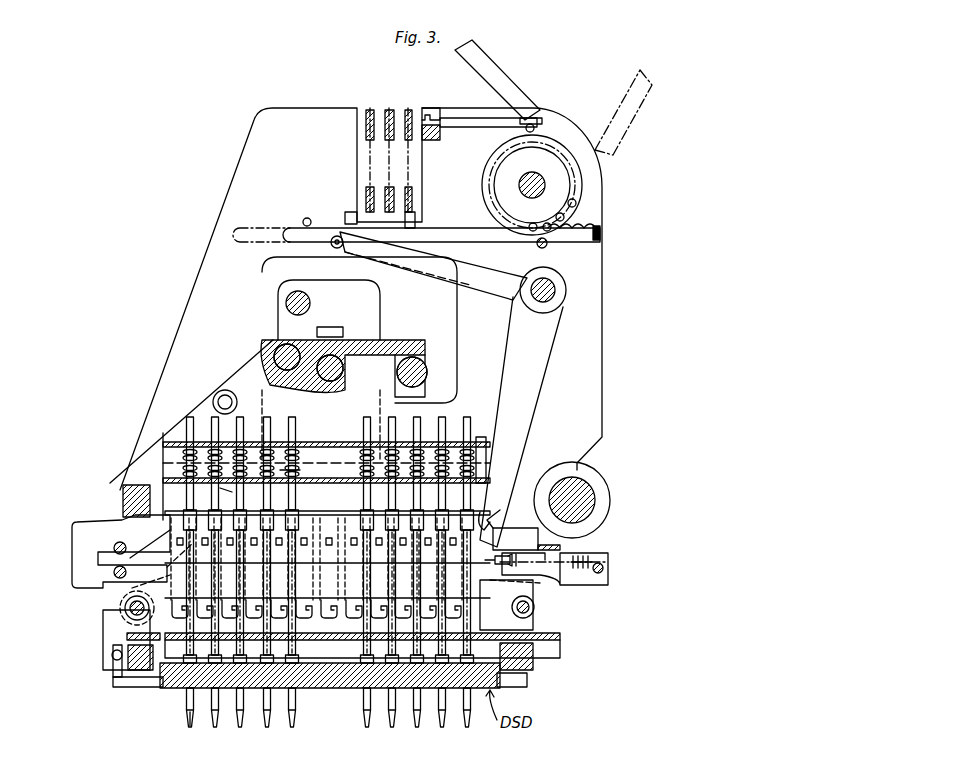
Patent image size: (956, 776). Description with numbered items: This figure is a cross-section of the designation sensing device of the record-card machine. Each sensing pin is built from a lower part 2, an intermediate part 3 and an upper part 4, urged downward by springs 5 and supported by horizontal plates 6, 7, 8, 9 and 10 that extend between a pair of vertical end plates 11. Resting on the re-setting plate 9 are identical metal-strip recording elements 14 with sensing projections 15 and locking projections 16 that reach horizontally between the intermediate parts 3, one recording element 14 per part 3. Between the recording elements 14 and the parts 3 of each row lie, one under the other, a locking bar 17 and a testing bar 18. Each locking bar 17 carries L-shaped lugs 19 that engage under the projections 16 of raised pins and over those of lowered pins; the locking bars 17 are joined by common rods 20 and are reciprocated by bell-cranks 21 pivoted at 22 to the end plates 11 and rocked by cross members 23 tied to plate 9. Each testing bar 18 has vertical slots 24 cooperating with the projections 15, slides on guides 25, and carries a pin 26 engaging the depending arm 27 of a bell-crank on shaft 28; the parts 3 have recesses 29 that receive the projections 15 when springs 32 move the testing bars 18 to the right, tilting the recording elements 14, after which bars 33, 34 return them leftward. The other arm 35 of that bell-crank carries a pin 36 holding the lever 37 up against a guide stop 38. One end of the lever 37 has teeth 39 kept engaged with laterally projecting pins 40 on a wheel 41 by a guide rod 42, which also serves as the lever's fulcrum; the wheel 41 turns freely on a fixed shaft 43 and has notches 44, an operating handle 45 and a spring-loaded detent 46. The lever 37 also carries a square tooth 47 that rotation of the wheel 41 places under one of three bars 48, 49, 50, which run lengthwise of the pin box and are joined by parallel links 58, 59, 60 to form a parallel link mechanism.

The lower part 2 is at (186, 713).
The intermediate part 3 is at (366, 648).
The upper part 4 is at (280, 440).
The springs 5 is at (340, 442).
The horizontal plate 6 is at (275, 455).
The horizontal plate 7 is at (300, 470).
The horizontal plate 8 is at (230, 490).
The re-setting plate 9 is at (113, 658).
The horizontal plate 10 is at (190, 688).
The vertical end plates 11 is at (255, 420).
The recording elements 14 is at (345, 628).
The sensing projections 15 is at (132, 498).
The locking projections 16 is at (115, 620).
The locking bar 17 is at (533, 622).
The testing bar 18 is at (500, 540).
The L-shaped lugs 19 is at (345, 575).
The common rods 20 is at (534, 607).
The bell-cranks 21 is at (533, 648).
The pivot 22 is at (527, 665).
The cross members 23 is at (527, 683).
The vertical slots 24 is at (315, 535).
The guides 25 is at (118, 542).
The pin 26 is at (498, 527).
The depending arm 27 is at (545, 340).
The shaft 28 is at (555, 295).
The recesses 29 is at (360, 545).
The springs 32 is at (608, 580).
The bar 33 is at (610, 562).
The bar 34 is at (570, 552).
The other arm 35 is at (488, 268).
The pin 36 is at (338, 236).
The lever 37 is at (440, 228).
The guide stop 38 is at (308, 218).
The teeth 39 is at (585, 238).
The laterally projecting pins 40 is at (578, 218).
The wheel 41 is at (546, 130).
The guide rod 42 is at (548, 246).
The fixed shaft 43 is at (545, 188).
The notches 44 is at (495, 140).
The operating handle 45 is at (528, 118).
The spring-loaded detent 46 is at (455, 120).
The square tooth 47 is at (415, 215).
The bar 48 is at (415, 191).
The bar 49 is at (394, 191).
The bar 50 is at (371, 191).
The link 58 is at (407, 110).
The link 59 is at (387, 110).
The link 60 is at (365, 110).